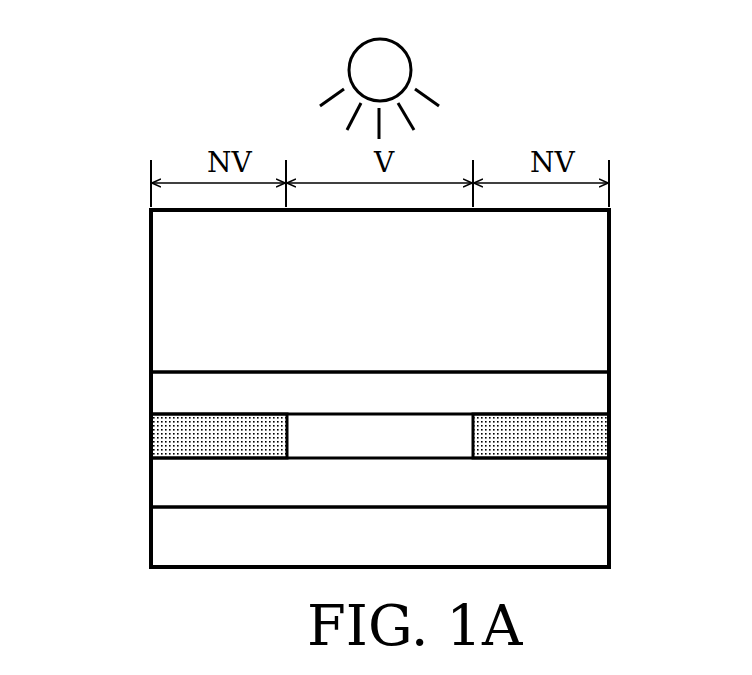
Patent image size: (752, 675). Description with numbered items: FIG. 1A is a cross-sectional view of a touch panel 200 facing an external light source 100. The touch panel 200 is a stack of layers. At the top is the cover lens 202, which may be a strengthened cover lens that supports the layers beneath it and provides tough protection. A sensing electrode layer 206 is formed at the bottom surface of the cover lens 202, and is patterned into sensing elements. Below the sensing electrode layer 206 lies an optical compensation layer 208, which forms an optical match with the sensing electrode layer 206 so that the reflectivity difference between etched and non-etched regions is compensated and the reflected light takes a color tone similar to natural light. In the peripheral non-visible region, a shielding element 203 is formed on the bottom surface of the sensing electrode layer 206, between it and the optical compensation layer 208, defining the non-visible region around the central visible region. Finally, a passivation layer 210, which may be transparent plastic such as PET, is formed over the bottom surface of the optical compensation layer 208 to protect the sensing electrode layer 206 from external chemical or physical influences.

The touch panel 200 is at (118, 84).
The external light source 100 is at (411, 62).
The cover lens 202 is at (595, 290).
The sensing electrode layer 206 is at (597, 395).
The shielding element 203 is at (597, 437).
The optical compensation layer 208 is at (597, 485).
The passivation layer 210 is at (597, 535).